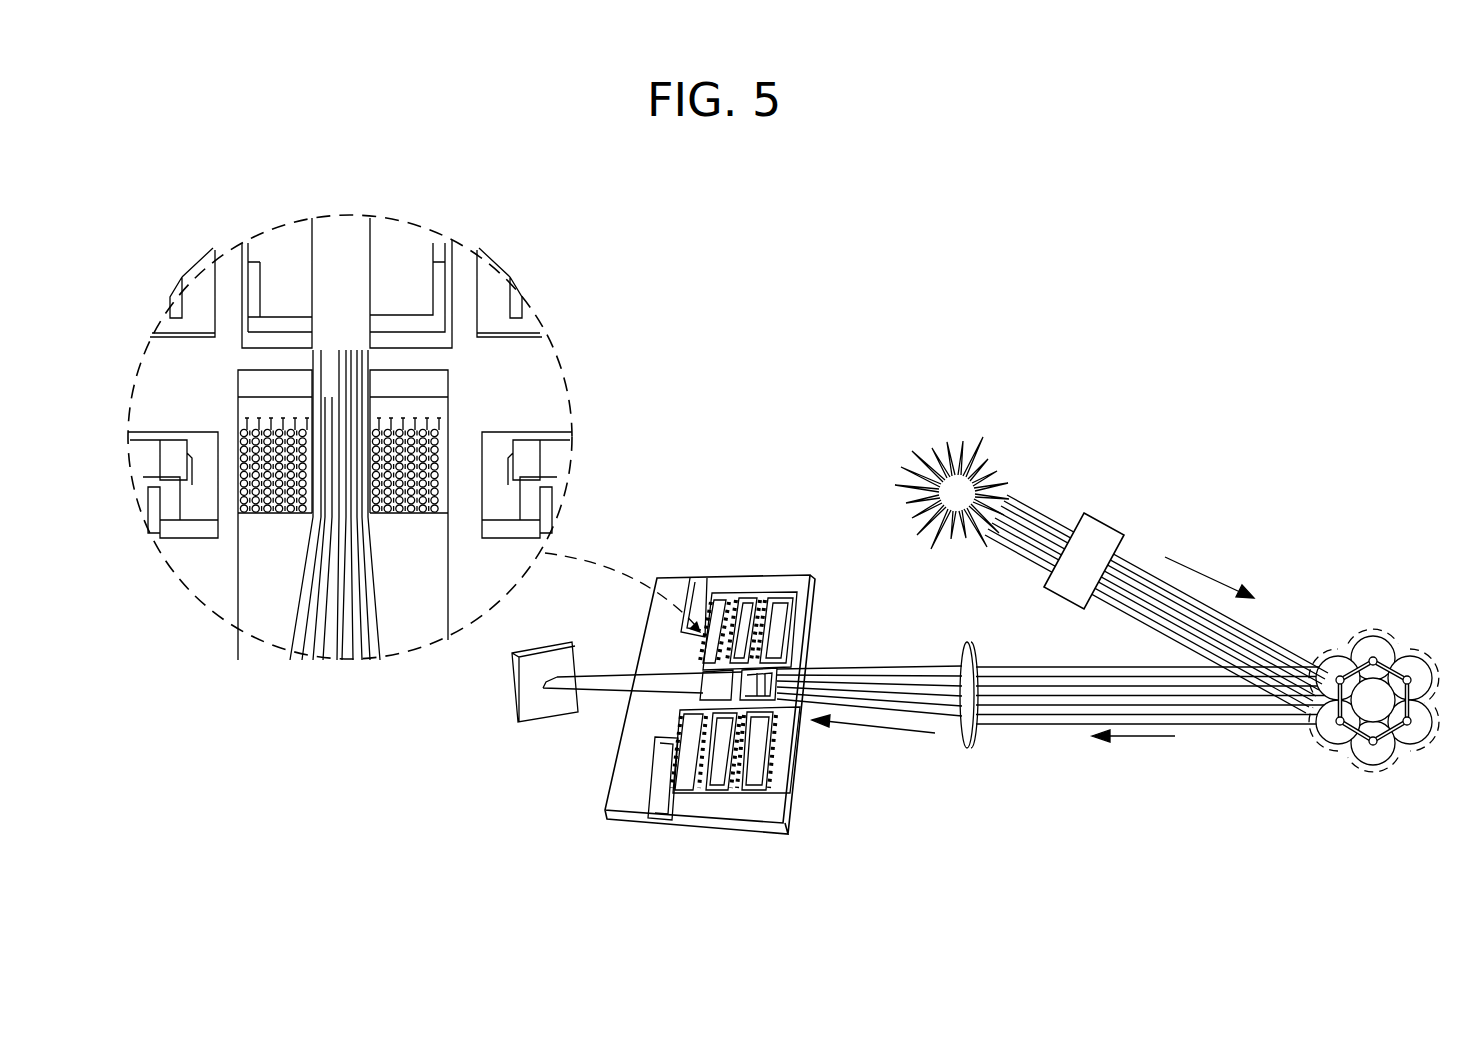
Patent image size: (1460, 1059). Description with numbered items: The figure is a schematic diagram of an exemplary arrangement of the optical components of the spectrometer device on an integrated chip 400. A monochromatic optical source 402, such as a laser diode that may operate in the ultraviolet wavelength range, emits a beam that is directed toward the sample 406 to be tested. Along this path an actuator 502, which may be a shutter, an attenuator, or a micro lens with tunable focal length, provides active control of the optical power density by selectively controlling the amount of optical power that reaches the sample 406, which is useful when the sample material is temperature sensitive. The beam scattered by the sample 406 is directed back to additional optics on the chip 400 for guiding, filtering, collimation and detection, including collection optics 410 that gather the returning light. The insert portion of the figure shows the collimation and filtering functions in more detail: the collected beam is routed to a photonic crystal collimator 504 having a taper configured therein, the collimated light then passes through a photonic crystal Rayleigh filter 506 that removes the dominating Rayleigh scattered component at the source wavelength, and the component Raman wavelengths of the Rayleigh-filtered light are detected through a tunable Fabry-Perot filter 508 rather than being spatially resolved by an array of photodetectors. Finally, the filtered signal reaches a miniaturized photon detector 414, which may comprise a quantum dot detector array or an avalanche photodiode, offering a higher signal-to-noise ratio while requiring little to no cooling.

The integrated chip 400 is at (672, 592).
The monochromatic optical source 402 is at (960, 445).
The sample 406 is at (1373, 636).
The collection optics 410 is at (962, 746).
The photon detector 414 is at (543, 686).
The actuator 502 is at (1103, 520).
The photonic crystal collimator 504 is at (241, 495).
The photonic crystal Rayleigh filter 506 is at (216, 388).
The tunable Fabry-Perot filter 508 is at (269, 329).